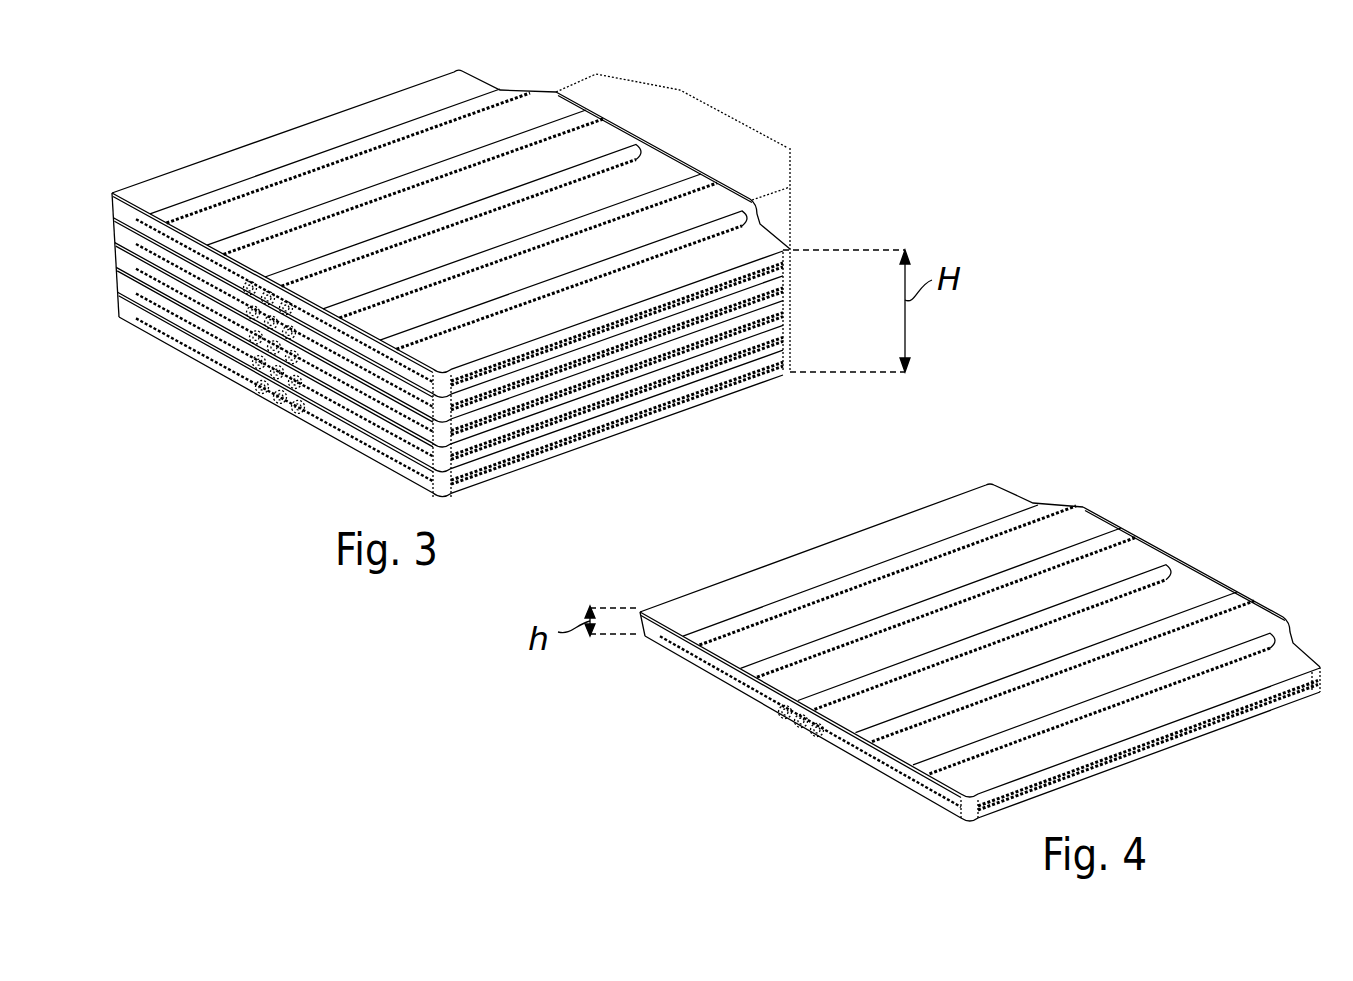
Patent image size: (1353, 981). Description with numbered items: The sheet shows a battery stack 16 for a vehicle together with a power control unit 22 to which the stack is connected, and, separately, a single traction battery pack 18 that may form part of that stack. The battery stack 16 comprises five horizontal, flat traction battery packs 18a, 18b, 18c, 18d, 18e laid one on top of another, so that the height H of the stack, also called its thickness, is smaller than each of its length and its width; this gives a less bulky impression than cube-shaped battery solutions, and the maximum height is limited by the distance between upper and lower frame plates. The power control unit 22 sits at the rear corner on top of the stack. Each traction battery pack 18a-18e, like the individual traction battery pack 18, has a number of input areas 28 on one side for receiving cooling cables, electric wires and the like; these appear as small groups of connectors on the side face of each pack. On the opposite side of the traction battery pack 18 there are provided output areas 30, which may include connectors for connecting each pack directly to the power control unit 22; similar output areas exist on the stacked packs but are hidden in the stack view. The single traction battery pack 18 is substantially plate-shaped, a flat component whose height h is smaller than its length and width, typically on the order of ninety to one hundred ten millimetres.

In FIG. 3, the battery stack 16 is at (261, 100).
In FIG. 4, the traction battery pack 18 is at (1113, 727).
In FIG. 3, the traction battery pack 18a is at (477, 373).
In FIG. 3, the traction battery pack 18b is at (537, 377).
In FIG. 3, the traction battery pack 18c is at (610, 377).
In FIG. 3, the traction battery pack 18d is at (693, 373).
In FIG. 3, the traction battery pack 18e is at (757, 377).
In FIG. 3, the power control unit 22 is at (773, 158).
In FIG. 3, the input areas 28 is at (277, 405).
In FIG. 4, the input areas 28 is at (770, 705).
In FIG. 4, the output areas 30 is at (1203, 570).